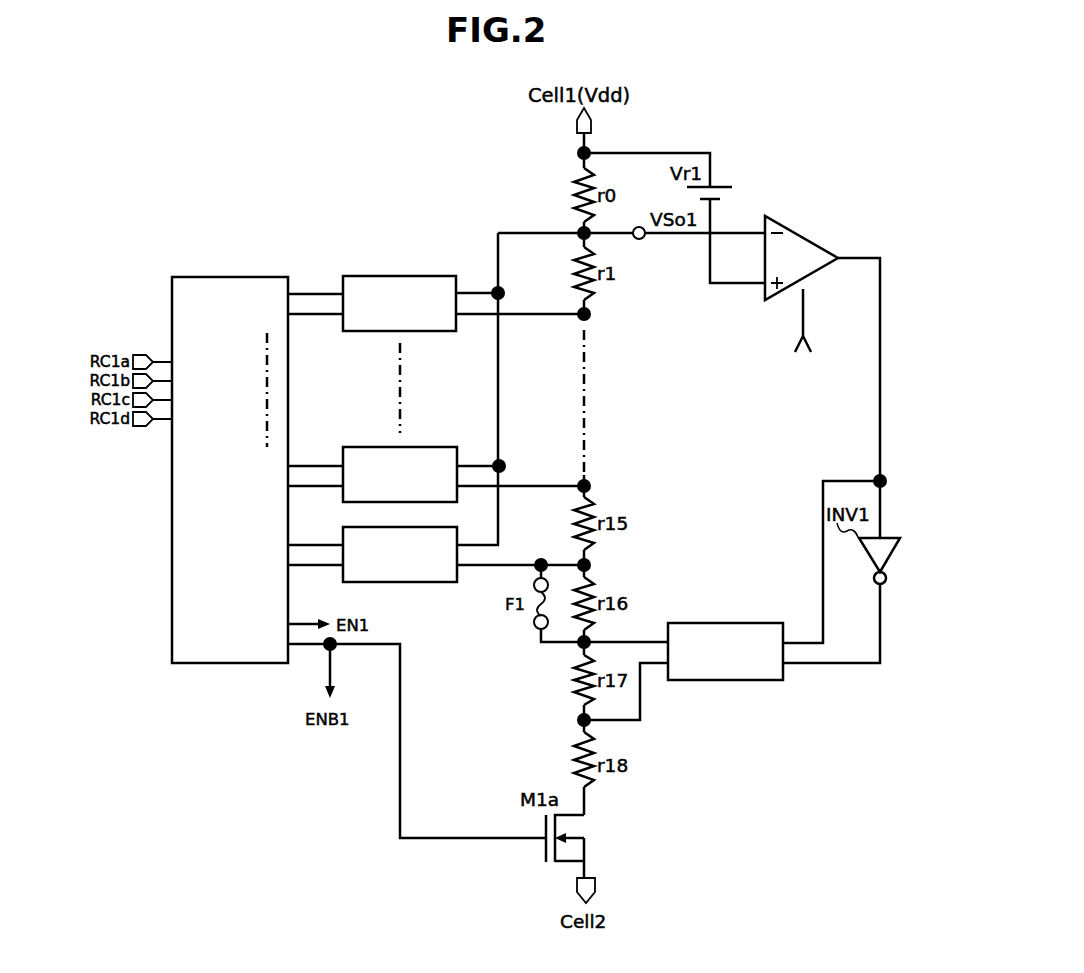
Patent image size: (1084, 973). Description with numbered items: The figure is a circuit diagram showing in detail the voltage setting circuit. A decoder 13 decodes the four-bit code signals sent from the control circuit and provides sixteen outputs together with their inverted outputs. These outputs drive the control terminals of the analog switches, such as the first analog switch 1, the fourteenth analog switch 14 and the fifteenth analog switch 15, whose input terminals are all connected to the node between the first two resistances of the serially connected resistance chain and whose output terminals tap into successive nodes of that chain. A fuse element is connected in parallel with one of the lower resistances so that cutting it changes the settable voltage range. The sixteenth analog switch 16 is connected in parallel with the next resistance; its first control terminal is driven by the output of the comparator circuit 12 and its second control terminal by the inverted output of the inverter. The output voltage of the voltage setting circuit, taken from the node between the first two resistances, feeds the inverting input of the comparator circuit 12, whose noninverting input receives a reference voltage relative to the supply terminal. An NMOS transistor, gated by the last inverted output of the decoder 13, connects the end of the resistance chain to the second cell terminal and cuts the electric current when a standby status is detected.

The decoder 13 is at (234, 262).
The comparator circuit 12 is at (832, 220).
The analog switch 1 is at (444, 262).
The analog switch 14 is at (449, 433).
The analog switch 15 is at (445, 582).
The analog switch 16 is at (759, 609).